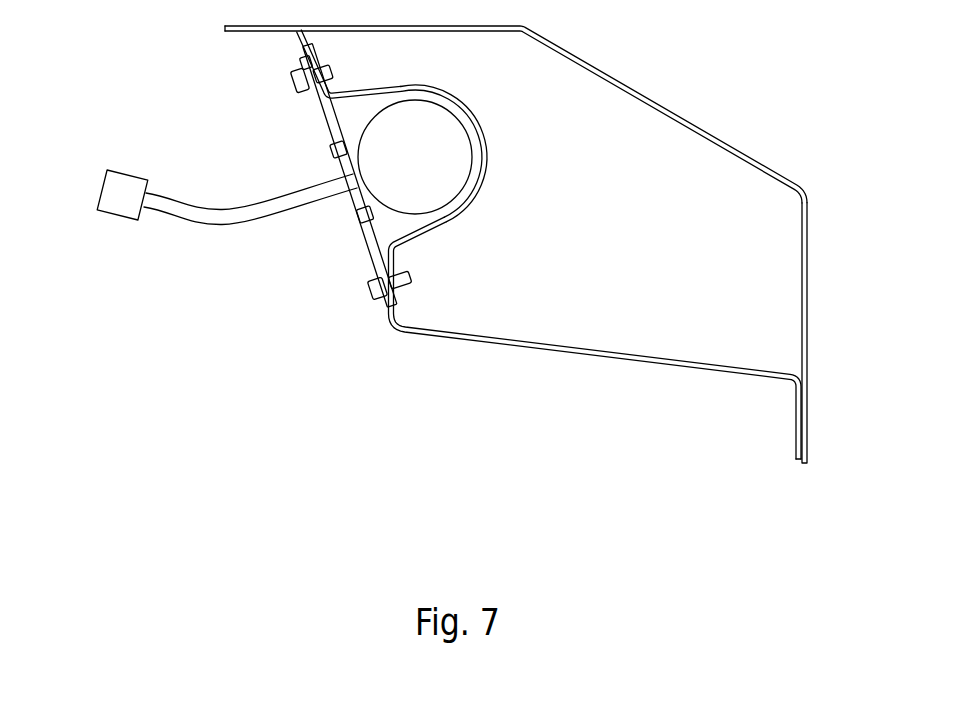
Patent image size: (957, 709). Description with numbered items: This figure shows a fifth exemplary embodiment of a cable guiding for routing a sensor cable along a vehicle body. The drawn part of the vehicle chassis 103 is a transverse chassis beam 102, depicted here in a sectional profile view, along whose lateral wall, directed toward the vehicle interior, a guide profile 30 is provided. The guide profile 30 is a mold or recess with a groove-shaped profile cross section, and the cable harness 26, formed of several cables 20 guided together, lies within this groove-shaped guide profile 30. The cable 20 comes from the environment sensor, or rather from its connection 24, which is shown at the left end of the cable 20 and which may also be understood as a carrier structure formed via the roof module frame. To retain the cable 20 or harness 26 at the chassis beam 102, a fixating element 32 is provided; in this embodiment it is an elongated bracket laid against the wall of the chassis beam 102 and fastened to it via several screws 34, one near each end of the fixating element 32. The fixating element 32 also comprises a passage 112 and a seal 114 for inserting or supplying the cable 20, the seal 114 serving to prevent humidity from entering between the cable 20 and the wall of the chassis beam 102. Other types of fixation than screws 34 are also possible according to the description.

The cable 20 is at (250, 227).
The connection 24 is at (105, 205).
The cable harness 26 is at (423, 178).
The guide profile 30 is at (470, 143).
The fixating element 32 is at (373, 255).
The screws 34 is at (382, 288).
The chassis beam 102 is at (600, 355).
The vehicle chassis 103 is at (803, 205).
The passage 112 is at (357, 217).
The seal 114 is at (347, 163).